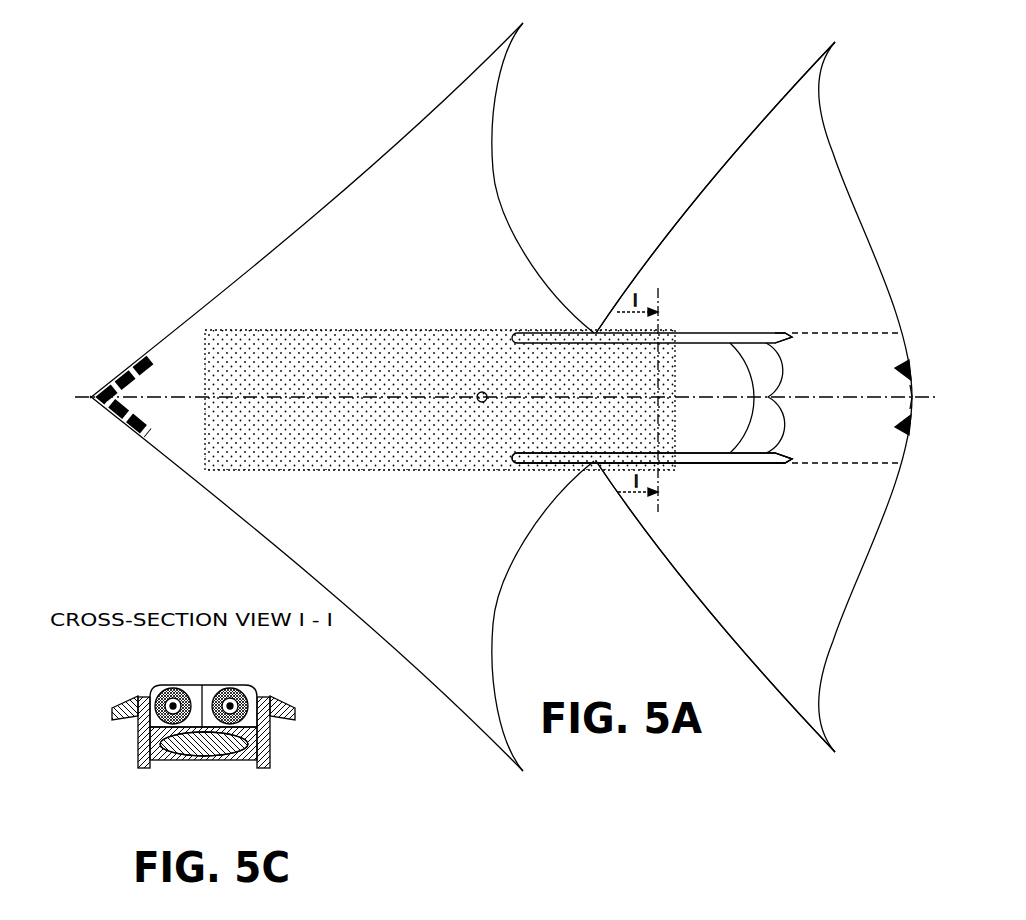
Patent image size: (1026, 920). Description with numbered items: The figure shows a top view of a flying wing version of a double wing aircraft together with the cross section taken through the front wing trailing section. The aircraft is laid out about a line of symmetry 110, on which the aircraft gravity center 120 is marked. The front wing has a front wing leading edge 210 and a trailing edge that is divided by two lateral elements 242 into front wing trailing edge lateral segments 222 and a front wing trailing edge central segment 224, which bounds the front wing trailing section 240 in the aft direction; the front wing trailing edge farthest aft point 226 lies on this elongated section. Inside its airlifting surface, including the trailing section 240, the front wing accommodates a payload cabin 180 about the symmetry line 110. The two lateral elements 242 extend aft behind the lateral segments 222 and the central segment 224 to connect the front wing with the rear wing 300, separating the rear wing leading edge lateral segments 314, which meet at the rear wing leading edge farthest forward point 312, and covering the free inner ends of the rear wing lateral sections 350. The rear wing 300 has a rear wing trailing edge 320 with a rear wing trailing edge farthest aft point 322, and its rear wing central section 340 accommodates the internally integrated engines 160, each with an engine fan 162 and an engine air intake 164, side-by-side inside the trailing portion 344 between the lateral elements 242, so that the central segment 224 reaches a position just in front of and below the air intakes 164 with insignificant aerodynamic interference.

In FIG. 5A, the line of symmetry 110 is at (90, 398).
In FIG. 5A, the aircraft gravity center 120 is at (485, 392).
In FIG. 5C, the internally integrated engines 160 is at (152, 693).
In FIG. 5C, the engine fan 162 is at (190, 693).
In FIG. 5A, the engine air intake 164 is at (784, 423).
In FIG. 5C, the engine air intake 164 is at (210, 687).
In FIG. 5A, the payload cabin 180 is at (538, 413).
In FIG. 5A, the front wing leading edge 210 is at (242, 518).
In FIG. 5A, the front wing trailing edge lateral segments 222 is at (498, 203).
In FIG. 5A, the front wing trailing edge central segment 224 is at (745, 362).
In FIG. 5A, the front wing trailing edge farthest aft point 226 is at (747, 390).
In FIG. 5A, the front wing trailing section 240 is at (612, 407).
In FIG. 5C, the front wing trailing section 240 is at (190, 760).
In FIG. 5A, the front wing trailing section lateral elements 242 is at (578, 333).
In FIG. 5C, the front wing trailing section lateral elements 242 is at (138, 750).
In FIG. 5A, the rear wing 300 is at (812, 353).
In FIG. 5A, the rear wing leading edge farthest forward point 312 is at (597, 463).
In FIG. 5A, the rear wing leading edge lateral segments 314 is at (740, 135).
In FIG. 5A, the rear wing trailing edge 320 is at (847, 192).
In FIG. 5A, the rear wing trailing edge farthest aft point 322 is at (912, 393).
In FIG. 5A, the rear wing central section 340 is at (838, 370).
In FIG. 5A, the rear wing central section trailing portion 344 is at (865, 437).
In FIG. 5A, the rear wing lateral sections 350 is at (725, 183).
In FIG. 5C, the rear wing lateral sections 350 is at (117, 707).